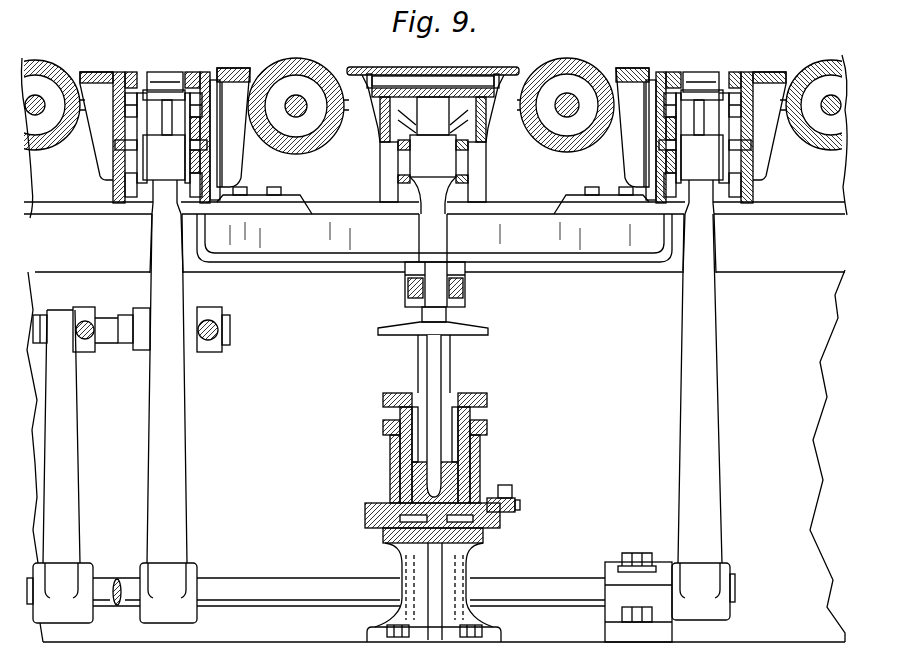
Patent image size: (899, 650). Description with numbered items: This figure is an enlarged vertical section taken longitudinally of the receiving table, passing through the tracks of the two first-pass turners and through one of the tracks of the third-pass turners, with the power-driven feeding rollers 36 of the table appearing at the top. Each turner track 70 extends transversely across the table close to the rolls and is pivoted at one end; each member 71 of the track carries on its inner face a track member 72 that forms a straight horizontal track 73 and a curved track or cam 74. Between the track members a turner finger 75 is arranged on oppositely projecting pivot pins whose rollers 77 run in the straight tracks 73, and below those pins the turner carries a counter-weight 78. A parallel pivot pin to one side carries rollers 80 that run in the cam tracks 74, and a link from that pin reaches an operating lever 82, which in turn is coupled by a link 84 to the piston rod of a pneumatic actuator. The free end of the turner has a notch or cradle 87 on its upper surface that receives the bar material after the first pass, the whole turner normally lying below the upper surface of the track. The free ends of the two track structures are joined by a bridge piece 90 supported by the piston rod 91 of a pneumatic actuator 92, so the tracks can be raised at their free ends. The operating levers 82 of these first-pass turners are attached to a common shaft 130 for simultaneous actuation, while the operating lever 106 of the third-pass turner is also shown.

The feeding rollers 36 is at (574, 60).
The turner track 70 is at (226, 76).
The track member 71 is at (95, 74).
The track member 72 is at (120, 86).
The straight horizontal track 73 is at (112, 178).
The curved track or cam 74 is at (127, 185).
The turner finger 75 is at (163, 117).
The rollers 77 is at (128, 105).
The counter-weight 78 is at (163, 175).
The rollers 80 is at (208, 156).
The operating lever 82 is at (180, 403).
The link 84 is at (197, 328).
The notch or cradle 87 is at (167, 80).
The bridge piece 90 is at (550, 260).
The piston rod 91 is at (440, 377).
The pneumatic actuator 92 is at (480, 470).
The operating lever 106 is at (418, 366).
The shaft 130 is at (537, 582).